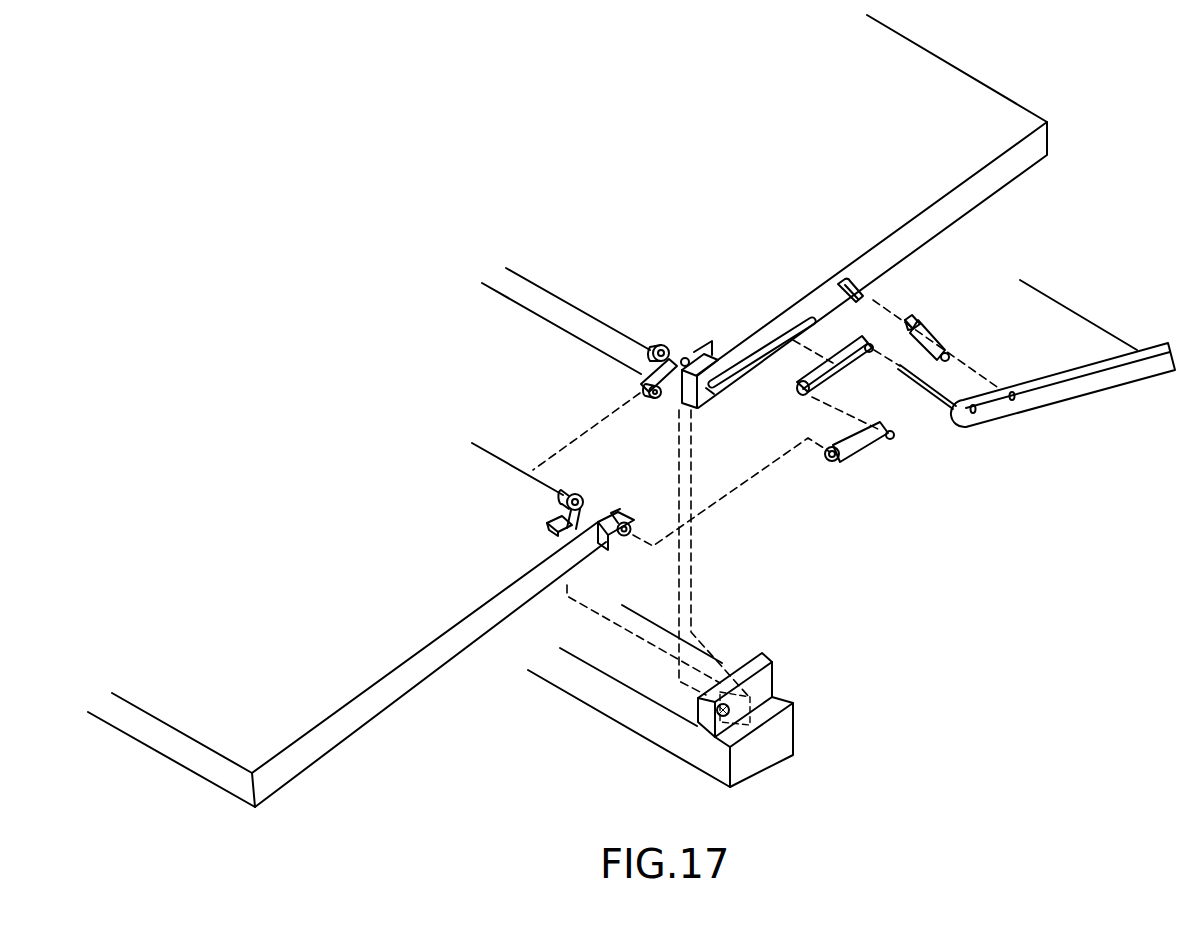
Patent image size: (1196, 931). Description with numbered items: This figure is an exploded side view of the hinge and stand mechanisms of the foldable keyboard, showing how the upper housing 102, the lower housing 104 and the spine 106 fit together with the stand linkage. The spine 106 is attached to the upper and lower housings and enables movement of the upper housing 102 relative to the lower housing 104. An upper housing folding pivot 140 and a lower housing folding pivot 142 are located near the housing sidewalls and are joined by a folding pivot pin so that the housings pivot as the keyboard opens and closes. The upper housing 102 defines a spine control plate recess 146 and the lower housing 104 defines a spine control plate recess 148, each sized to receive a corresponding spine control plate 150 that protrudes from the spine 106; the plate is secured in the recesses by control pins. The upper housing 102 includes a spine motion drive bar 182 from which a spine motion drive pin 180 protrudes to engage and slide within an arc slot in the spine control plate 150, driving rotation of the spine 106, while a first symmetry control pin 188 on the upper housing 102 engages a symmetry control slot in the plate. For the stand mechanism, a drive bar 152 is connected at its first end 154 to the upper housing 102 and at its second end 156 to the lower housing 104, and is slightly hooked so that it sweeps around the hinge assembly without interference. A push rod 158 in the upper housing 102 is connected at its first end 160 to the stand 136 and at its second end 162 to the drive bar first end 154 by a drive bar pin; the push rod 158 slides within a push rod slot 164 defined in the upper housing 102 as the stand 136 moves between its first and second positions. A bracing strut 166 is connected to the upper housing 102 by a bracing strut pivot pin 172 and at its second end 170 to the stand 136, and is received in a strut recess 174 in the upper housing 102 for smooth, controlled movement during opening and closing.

The upper housing 102 is at (951, 97).
The lower housing 104 is at (272, 732).
The spine 106 is at (750, 763).
The stand 136 is at (1090, 390).
The upper housing folding pivot 140 is at (651, 355).
The lower housing folding pivot 142 is at (568, 499).
The spine control plate recess 146 is at (688, 352).
The spine control plate recess 148 is at (547, 516).
The spine control plate 150 is at (758, 660).
The drive bar 152 is at (860, 455).
The drive bar first end 154 is at (888, 437).
The drive bar second end 156 is at (828, 453).
The push rod 158 is at (832, 373).
The push rod first end 160 is at (877, 355).
The push rod second end 162 is at (808, 398).
The push rod slot 164 is at (718, 382).
The bracing strut 166 is at (933, 335).
The bracing strut second end 170 is at (950, 352).
The bracing strut pivot pin 172 is at (917, 320).
The strut recess 174 is at (870, 297).
The spine motion drive pin 180 is at (651, 388).
The spine motion drive bar 182 is at (672, 398).
The first symmetry control pin 188 is at (684, 360).